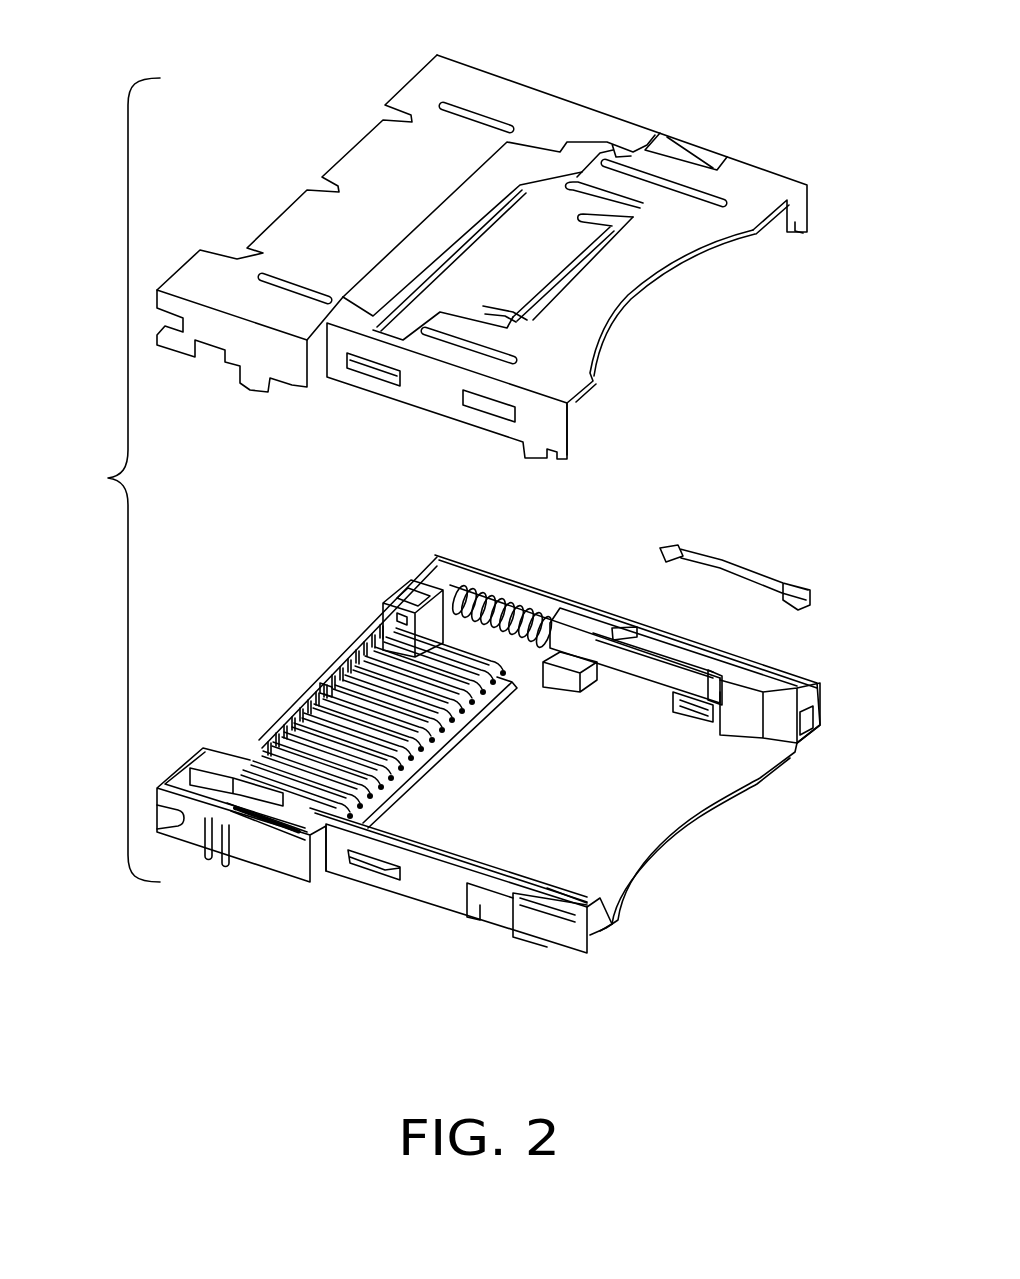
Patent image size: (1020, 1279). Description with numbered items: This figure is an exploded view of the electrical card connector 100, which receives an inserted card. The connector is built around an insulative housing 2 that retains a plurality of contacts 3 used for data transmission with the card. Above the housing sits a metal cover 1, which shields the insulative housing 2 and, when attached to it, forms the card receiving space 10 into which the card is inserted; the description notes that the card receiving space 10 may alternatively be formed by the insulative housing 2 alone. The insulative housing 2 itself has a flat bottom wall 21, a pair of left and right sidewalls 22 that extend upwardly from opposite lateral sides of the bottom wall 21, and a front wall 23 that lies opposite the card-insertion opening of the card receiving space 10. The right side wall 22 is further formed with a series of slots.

The electrical card connector 100 is at (101, 480).
The metal cover 1 is at (624, 77).
The insulative housing 2 is at (533, 603).
The contacts 3 is at (477, 653).
The card receiving space 10 is at (557, 810).
The bottom wall 21 is at (617, 857).
The sidewalls 22 is at (812, 705).
The front wall 23 is at (292, 712).